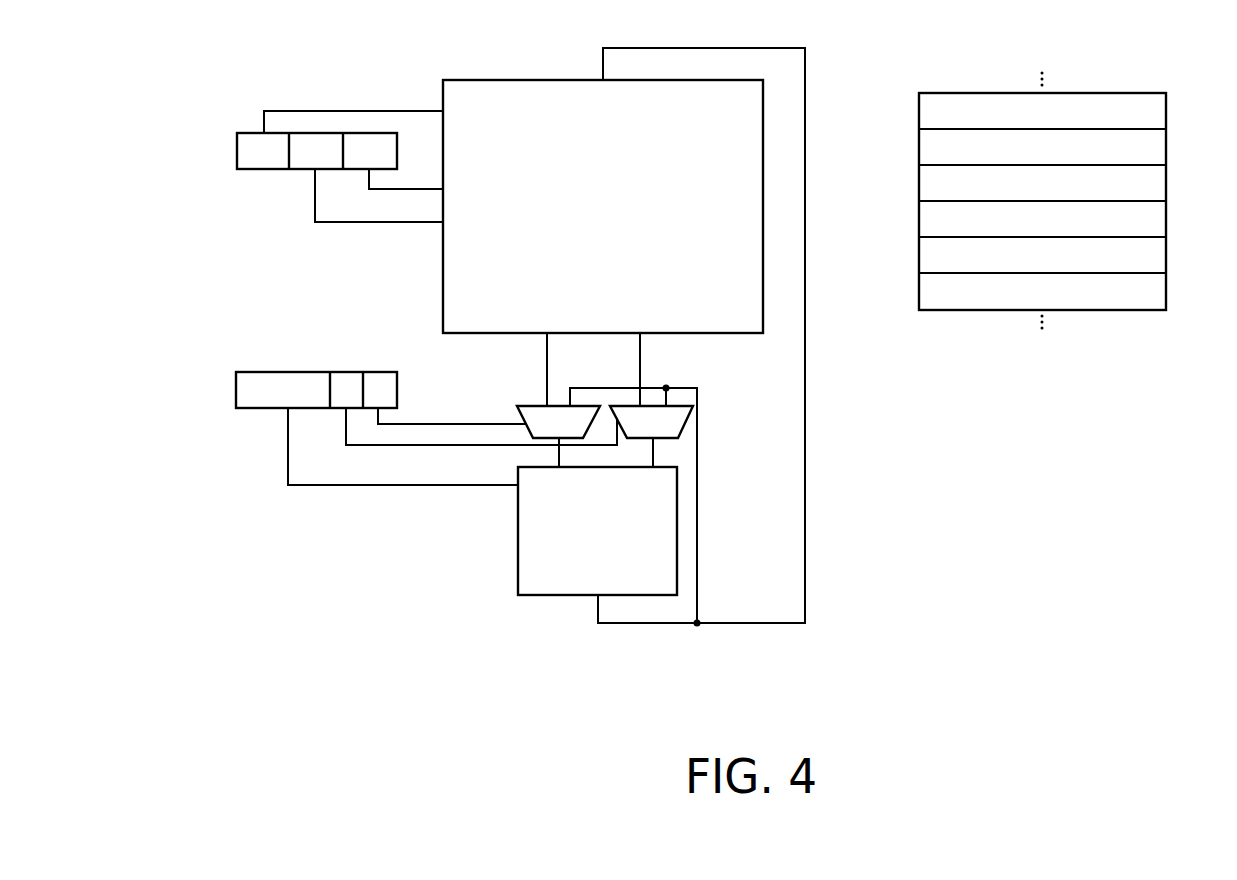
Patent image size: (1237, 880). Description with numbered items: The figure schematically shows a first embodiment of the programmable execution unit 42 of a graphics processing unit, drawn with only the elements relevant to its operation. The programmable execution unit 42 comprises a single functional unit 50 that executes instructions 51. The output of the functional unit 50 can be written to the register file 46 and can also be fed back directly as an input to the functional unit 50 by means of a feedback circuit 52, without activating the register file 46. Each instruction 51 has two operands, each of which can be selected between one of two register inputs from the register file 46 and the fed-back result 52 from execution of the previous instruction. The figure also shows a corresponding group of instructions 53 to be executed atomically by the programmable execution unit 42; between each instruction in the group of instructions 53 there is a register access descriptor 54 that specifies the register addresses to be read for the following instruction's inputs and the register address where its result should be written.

The programmable execution unit 42 is at (803, 663).
The register file 46 is at (533, 80).
The functional unit 50 is at (518, 538).
The instructions 51 is at (287, 372).
The feedback circuit 52 is at (697, 512).
The group of instructions 53 is at (1132, 373).
The register access descriptor 54 is at (237, 150).